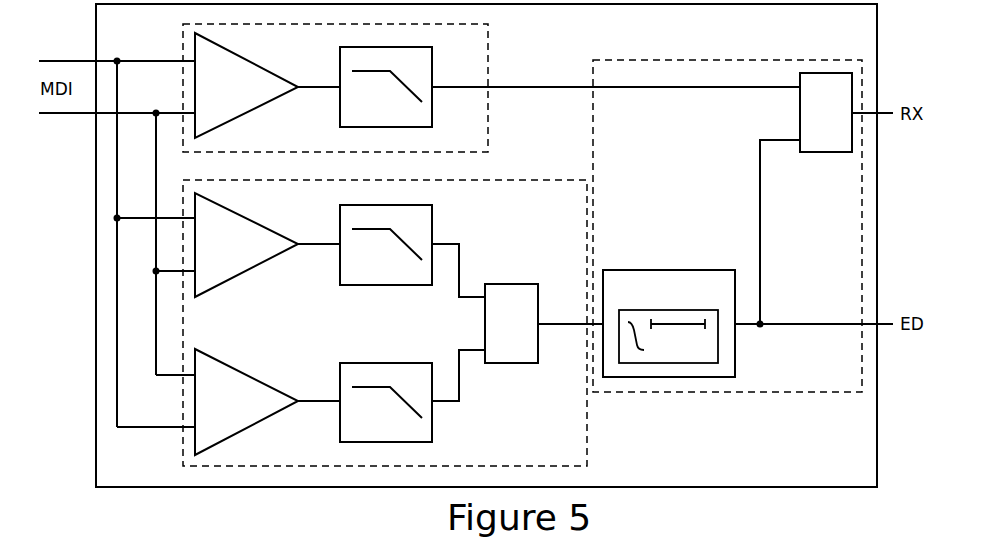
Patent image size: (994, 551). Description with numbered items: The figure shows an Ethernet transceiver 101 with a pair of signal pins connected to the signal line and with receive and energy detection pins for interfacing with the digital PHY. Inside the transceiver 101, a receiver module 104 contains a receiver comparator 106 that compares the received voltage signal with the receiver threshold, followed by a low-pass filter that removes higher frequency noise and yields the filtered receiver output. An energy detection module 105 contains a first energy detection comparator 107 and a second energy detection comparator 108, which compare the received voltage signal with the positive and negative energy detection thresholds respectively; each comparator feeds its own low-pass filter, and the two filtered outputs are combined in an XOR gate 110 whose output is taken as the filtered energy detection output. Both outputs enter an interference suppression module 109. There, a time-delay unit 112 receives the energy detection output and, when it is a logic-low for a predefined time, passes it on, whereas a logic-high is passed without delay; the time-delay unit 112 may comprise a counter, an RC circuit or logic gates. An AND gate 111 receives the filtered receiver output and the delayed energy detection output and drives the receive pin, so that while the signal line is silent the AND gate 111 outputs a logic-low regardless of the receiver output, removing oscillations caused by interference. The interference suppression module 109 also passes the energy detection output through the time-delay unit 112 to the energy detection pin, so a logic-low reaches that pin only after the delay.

The Ethernet transceiver 101 is at (486, 245).
The receiver module 104 is at (491, 88).
The energy detection module 105 is at (393, 323).
The receiver comparator 106 is at (247, 77).
The first energy detection comparator 107 is at (240, 237).
The second energy detection comparator 108 is at (247, 412).
The interference suppression module 109 is at (743, 226).
The XOR gate 110 is at (503, 297).
The AND gate 111 is at (827, 142).
The time-delay unit 112 is at (669, 323).